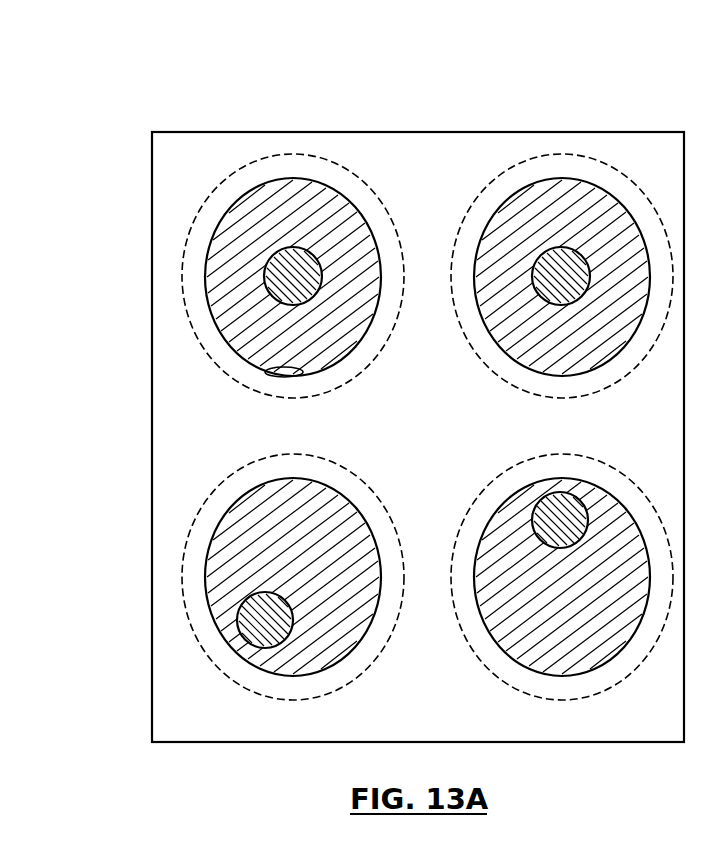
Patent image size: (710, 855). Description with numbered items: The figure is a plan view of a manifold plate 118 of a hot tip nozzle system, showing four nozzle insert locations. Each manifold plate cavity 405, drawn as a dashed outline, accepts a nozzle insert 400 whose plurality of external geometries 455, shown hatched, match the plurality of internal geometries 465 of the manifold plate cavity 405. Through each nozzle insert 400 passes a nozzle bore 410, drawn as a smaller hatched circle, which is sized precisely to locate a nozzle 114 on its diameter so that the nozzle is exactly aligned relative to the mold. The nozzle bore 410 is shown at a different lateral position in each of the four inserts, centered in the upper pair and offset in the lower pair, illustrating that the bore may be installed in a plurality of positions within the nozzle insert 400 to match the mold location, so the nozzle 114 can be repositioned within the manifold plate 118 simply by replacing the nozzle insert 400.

The manifold plate 118 is at (427, 152).
The manifold plate cavity 405 is at (232, 208).
The nozzle insert 400 is at (237, 263).
The nozzle 114 is at (283, 281).
The nozzle bore 410 is at (317, 283).
The external geometries 455 is at (350, 355).
The internal geometries 465 is at (298, 375).